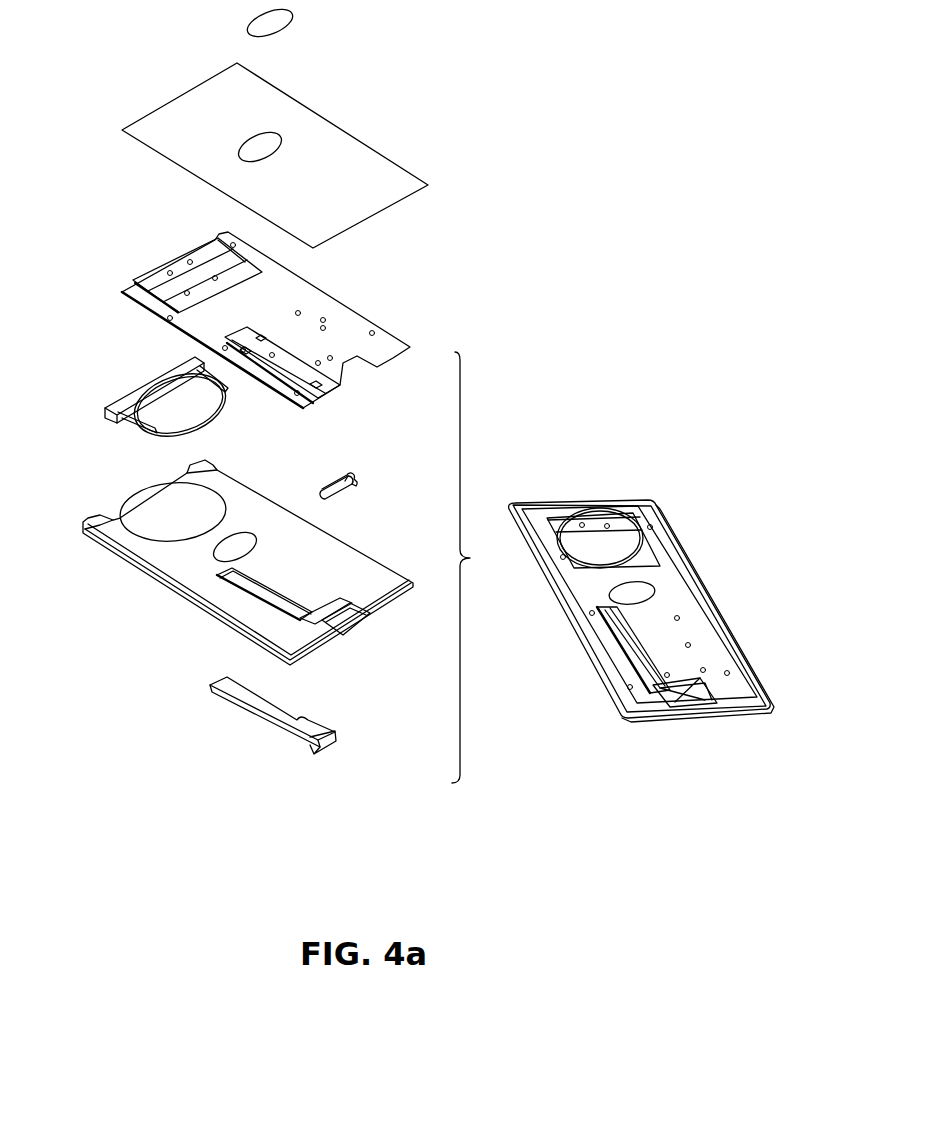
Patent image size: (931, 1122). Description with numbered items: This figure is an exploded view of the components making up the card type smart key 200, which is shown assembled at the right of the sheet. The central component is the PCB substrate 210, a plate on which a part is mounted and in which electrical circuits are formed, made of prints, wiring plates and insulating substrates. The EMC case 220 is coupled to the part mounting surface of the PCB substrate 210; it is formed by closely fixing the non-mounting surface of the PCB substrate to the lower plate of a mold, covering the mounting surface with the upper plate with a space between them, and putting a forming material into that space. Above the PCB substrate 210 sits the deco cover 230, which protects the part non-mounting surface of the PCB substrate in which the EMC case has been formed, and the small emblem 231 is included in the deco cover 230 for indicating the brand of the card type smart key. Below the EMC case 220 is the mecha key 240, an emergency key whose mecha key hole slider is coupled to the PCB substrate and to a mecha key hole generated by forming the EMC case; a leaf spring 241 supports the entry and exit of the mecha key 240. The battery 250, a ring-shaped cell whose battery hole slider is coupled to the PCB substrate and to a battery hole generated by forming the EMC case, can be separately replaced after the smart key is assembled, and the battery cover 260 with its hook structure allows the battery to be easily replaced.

The card type smart key 200 is at (578, 495).
The PCB substrate 210 is at (300, 292).
The EMC case 220 is at (175, 565).
The deco cover 230 is at (203, 160).
The emblem 231 is at (297, 20).
The mecha key 240 is at (243, 713).
The leaf spring 241 is at (353, 495).
The battery 250 is at (207, 415).
The battery cover 260 is at (140, 393).